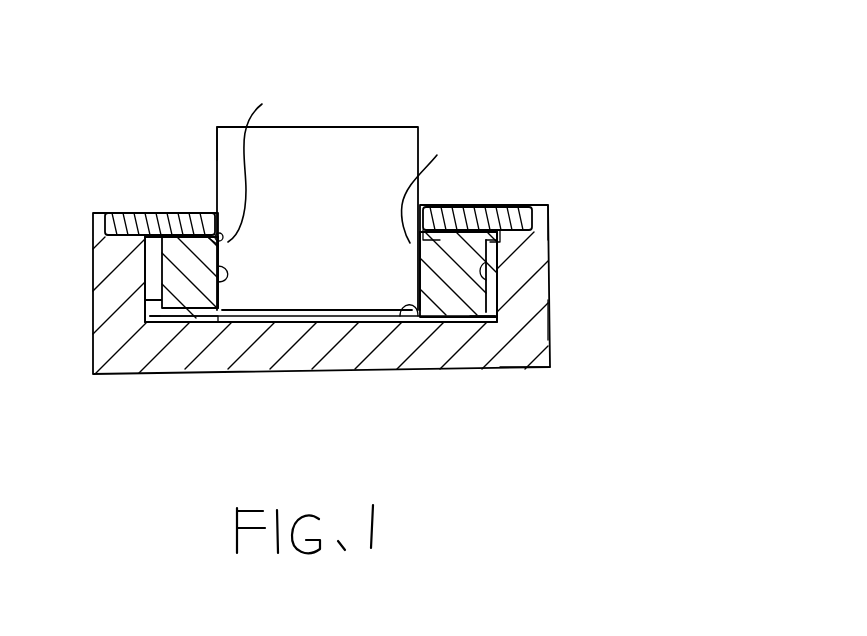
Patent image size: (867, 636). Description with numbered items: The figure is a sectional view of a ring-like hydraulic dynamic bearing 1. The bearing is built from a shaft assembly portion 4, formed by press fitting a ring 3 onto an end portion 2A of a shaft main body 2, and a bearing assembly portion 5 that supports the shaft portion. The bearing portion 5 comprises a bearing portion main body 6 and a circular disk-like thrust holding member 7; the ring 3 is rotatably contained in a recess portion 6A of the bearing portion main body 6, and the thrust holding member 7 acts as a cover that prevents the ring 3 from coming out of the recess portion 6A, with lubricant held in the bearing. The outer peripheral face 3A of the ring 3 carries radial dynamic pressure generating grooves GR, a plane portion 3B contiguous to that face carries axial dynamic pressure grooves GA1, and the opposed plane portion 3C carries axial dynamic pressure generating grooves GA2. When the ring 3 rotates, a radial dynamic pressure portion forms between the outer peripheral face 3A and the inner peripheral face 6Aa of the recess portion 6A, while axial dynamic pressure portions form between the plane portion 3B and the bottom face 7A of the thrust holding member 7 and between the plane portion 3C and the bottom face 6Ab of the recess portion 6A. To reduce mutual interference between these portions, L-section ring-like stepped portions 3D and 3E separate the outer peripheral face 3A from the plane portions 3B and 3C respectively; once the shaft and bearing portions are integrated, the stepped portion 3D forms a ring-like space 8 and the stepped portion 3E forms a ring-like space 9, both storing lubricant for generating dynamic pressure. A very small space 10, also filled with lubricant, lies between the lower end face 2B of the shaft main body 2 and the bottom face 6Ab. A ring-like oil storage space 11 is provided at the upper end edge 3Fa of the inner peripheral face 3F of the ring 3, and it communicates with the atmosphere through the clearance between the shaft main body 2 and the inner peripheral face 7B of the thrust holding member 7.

The ring-like hydraulic dynamic bearing 1 is at (450, 71).
The shaft main body 2 is at (367, 140).
The end portion 2A is at (246, 323).
The lower end face 2B is at (288, 308).
The ring 3 is at (440, 368).
The outer peripheral face 3A is at (540, 370).
The plane portion 3B is at (160, 213).
The plane portion 3C is at (180, 323).
The ring-like stepped portion 3D is at (486, 238).
The ring-like stepped portion 3E is at (460, 368).
The inner peripheral face 3F is at (162, 288).
The upper end edge 3Fa is at (269, 164).
The shaft assembly portion 4 is at (214, 150).
The bearing assembly portion 5 is at (552, 217).
The bearing portion main body 6 is at (548, 326).
The recess portion 6A is at (192, 323).
The inner peripheral face 6Aa is at (495, 278).
The bottom face 6Ab is at (412, 320).
The thrust holding member 7 is at (450, 207).
The bottom face 7A is at (436, 186).
The inner peripheral face 7B is at (426, 207).
The ring-like space 8 is at (495, 207).
The ring-like space 9 is at (480, 322).
The very small space 10 is at (330, 318).
The ring-like oil storage space 11 is at (216, 206).
The axial dynamic pressure grooves GA1 is at (183, 213).
The axial dynamic pressure generating grooves GA2 is at (163, 325).
The radial dynamic pressure generating grooves GR is at (145, 272).